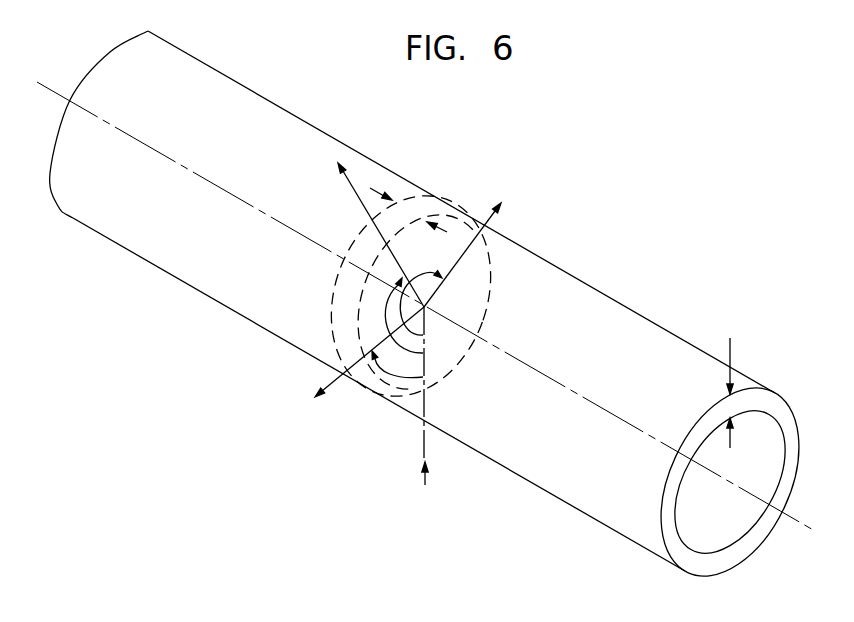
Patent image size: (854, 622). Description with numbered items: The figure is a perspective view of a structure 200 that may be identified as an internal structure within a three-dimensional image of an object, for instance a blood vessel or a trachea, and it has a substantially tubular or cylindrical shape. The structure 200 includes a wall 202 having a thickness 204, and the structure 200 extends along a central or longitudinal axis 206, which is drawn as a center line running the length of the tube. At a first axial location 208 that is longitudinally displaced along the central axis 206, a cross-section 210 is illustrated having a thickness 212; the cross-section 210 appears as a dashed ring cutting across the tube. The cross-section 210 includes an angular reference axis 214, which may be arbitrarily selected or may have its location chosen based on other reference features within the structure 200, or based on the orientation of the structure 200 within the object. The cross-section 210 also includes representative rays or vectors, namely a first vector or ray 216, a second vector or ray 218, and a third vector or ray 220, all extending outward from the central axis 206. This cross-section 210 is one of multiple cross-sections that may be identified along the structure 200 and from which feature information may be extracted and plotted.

The structure 200 is at (655, 200).
The wall 202 is at (240, 82).
The thickness 204 is at (730, 343).
The central or longitudinal axis 206 is at (800, 525).
The first axial location 208 is at (425, 485).
The cross-section 210 is at (413, 213).
The thickness 212 is at (380, 186).
The angular reference axis 214 is at (423, 442).
The first vector or ray 216 is at (333, 381).
The second vector or ray 218 is at (353, 168).
The third vector or ray 220 is at (502, 209).